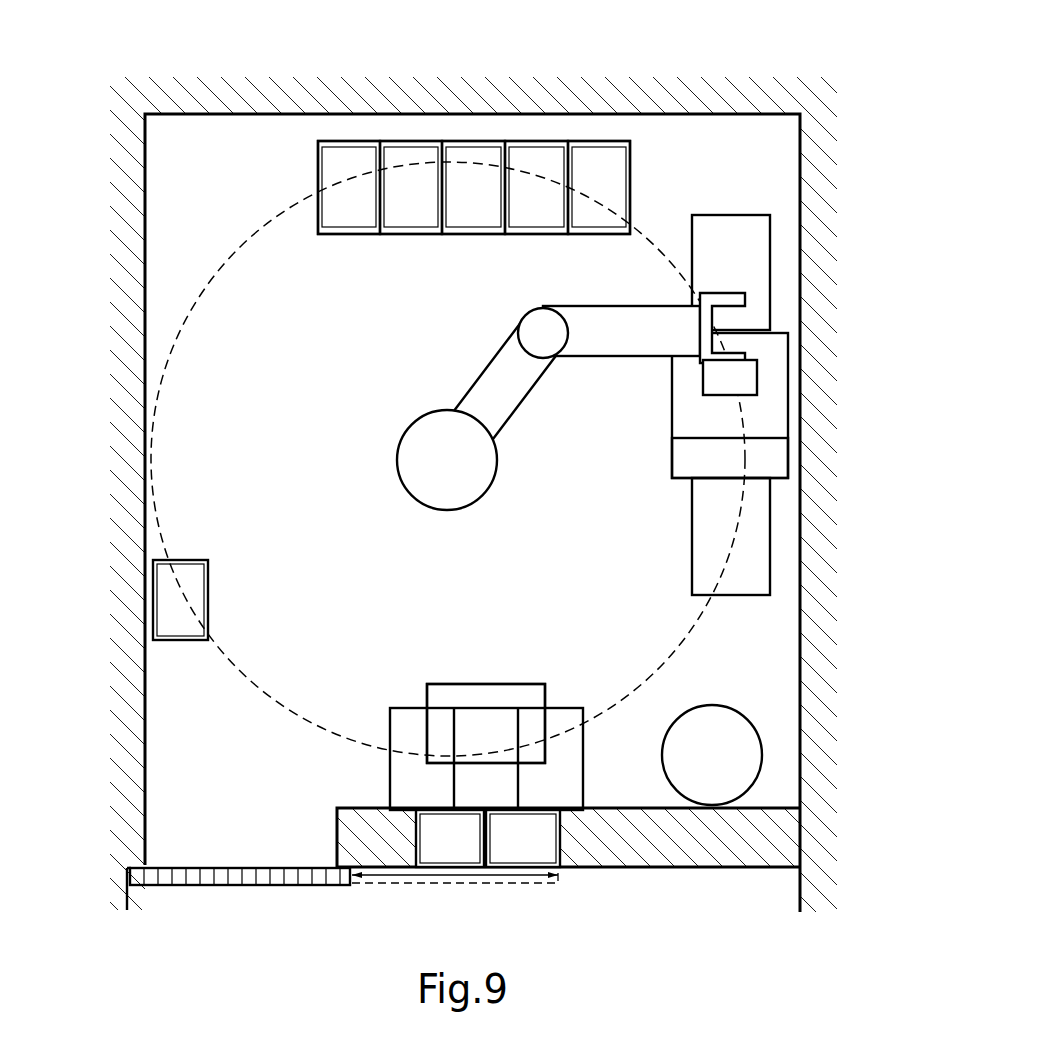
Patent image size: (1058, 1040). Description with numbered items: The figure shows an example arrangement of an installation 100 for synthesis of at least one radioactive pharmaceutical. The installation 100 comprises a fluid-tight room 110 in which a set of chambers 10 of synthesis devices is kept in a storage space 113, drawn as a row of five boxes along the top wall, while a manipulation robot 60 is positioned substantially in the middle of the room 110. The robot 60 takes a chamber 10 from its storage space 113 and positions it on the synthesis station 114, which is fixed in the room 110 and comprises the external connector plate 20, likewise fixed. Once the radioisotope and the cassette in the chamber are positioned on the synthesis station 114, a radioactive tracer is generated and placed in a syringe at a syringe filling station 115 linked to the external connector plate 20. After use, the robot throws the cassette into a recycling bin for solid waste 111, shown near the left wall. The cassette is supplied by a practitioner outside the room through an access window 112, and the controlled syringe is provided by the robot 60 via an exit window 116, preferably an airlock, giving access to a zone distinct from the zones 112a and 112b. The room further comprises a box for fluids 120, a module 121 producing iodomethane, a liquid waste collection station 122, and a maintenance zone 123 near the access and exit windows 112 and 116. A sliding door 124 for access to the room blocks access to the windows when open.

The installation 100 is at (66, 135).
The fluid-tight room 110 is at (120, 332).
The storage space 113 is at (470, 128).
The chamber 10 is at (615, 185).
The box for fluids 120 is at (742, 244).
The external connector plate 20 is at (759, 380).
The synthesis station 114 is at (770, 408).
The syringe filling station 115 is at (770, 458).
The module 121 is at (752, 538).
The liquid waste collection station 122 is at (725, 748).
The manipulation robot 60 is at (462, 474).
The recycling bin for solid waste 111 is at (200, 609).
The zone 112a is at (398, 780).
The zone 112b is at (473, 722).
The maintenance zone 123 is at (508, 683).
The door 124 is at (244, 866).
The access window 112 is at (473, 852).
The exit window 116 is at (543, 852).